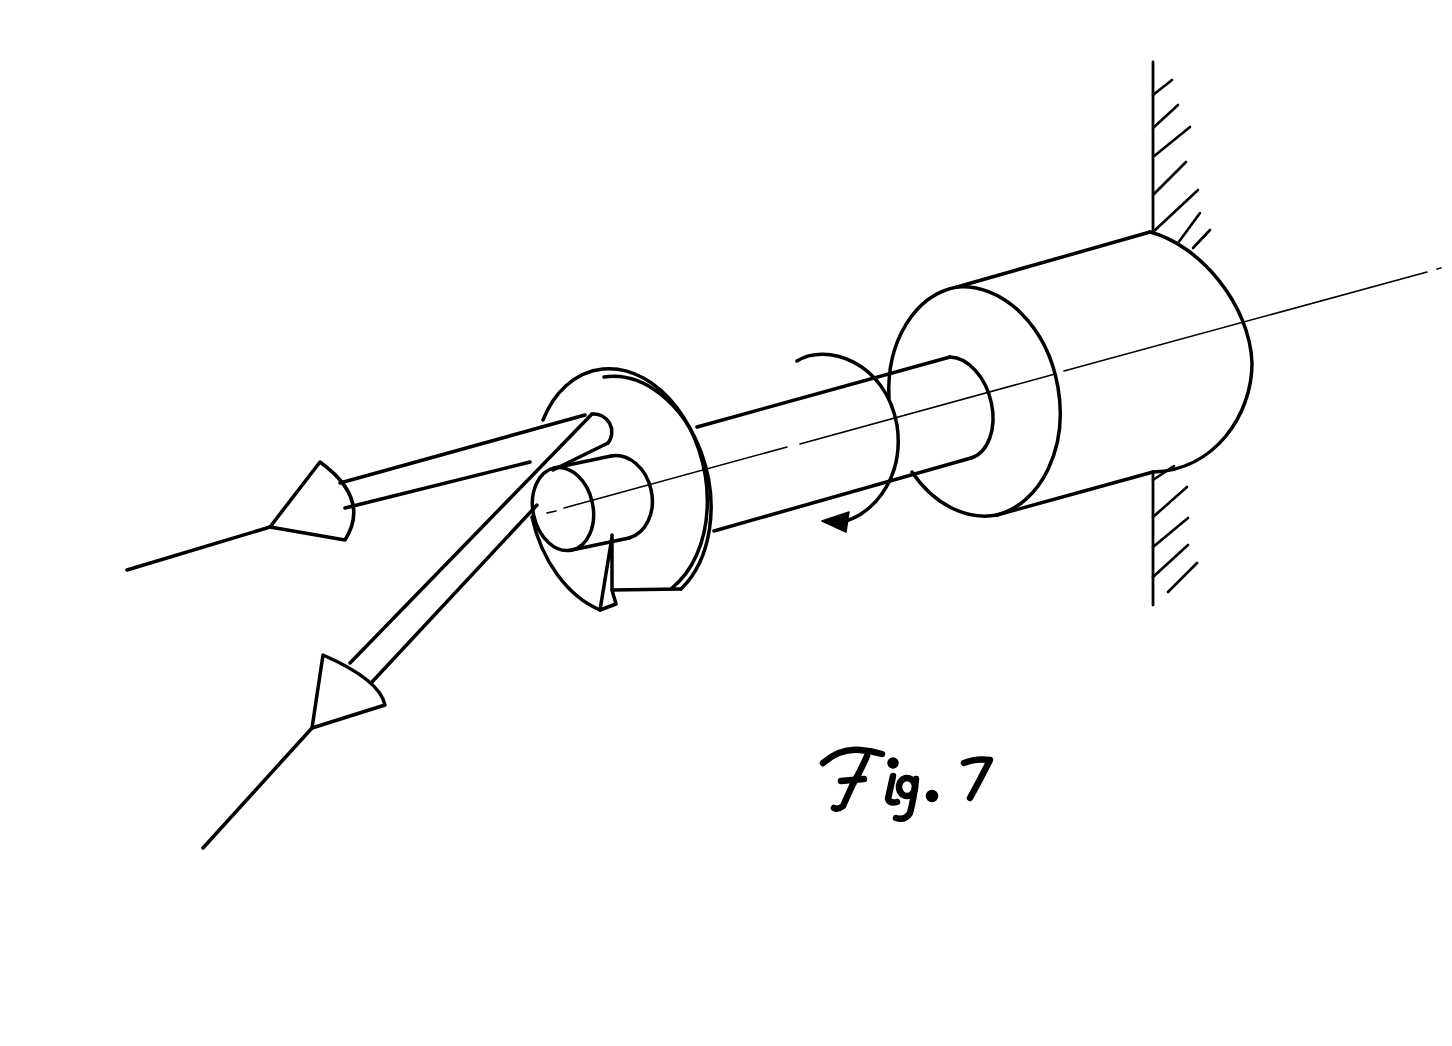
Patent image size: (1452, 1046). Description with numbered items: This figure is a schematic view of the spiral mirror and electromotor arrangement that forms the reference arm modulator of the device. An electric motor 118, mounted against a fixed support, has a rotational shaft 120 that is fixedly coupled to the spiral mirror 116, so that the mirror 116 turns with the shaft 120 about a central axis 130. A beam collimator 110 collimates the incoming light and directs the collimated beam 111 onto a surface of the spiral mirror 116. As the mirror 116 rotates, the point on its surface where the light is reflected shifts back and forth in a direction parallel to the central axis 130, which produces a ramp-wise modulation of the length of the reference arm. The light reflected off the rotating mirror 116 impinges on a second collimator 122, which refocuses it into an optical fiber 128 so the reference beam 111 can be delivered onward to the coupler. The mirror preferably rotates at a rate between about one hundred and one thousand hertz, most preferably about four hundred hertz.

The beam collimator 110 is at (311, 497).
The beam 111 is at (424, 614).
The spiral mirror 116 is at (627, 385).
The electric motor 118 is at (1182, 448).
The rotational shaft 120 is at (763, 418).
The second collimator 122 is at (344, 703).
The optical fiber 128 is at (237, 813).
The central axis 130 is at (1347, 292).